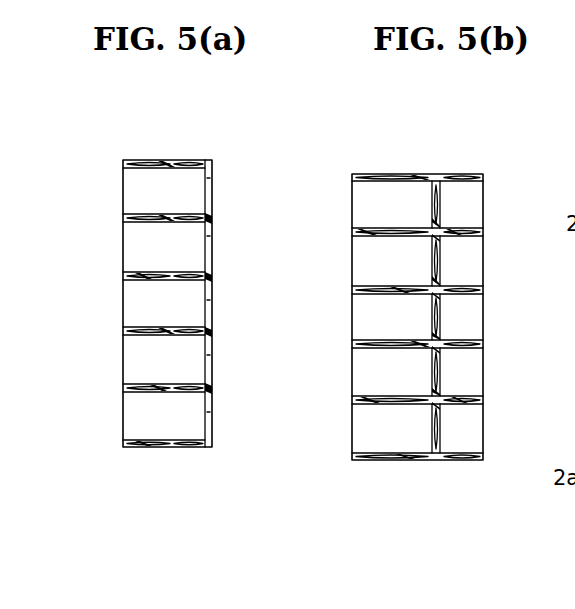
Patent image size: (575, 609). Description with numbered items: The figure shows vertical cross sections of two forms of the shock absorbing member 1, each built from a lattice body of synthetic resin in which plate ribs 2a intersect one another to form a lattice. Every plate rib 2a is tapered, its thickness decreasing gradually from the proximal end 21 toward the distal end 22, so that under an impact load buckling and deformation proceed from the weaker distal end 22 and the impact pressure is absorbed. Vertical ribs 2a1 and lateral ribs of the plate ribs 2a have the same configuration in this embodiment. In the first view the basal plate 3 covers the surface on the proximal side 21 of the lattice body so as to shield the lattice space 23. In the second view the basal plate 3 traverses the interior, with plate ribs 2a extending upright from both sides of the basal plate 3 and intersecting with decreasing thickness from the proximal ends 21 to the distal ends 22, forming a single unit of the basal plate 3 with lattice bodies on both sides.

In FIG. 5A, the shock absorbing member 1 is at (126, 464).
In FIG. 5B, the shock absorbing member 1 is at (377, 484).
In FIG. 5B, the plate rib 2a is at (368, 284).
In FIG. 5A, the vertical rib 2a1 is at (118, 410).
In FIG. 5B, the vertical rib 2a1 is at (348, 429).
In FIG. 5A, the basal plate 3 is at (212, 311).
In FIG. 5B, the basal plate 3 is at (440, 262).
In FIG. 5A, the proximal end 21 is at (208, 160).
In FIG. 5B, the proximal end 21 is at (435, 174).
In FIG. 5A, the distal end 22 is at (143, 215).
In FIG. 5B, the distal end 22 is at (362, 174).
In FIG. 5A, the lattice space 23 is at (170, 263).
In FIG. 5B, the lattice space 23 is at (399, 330).